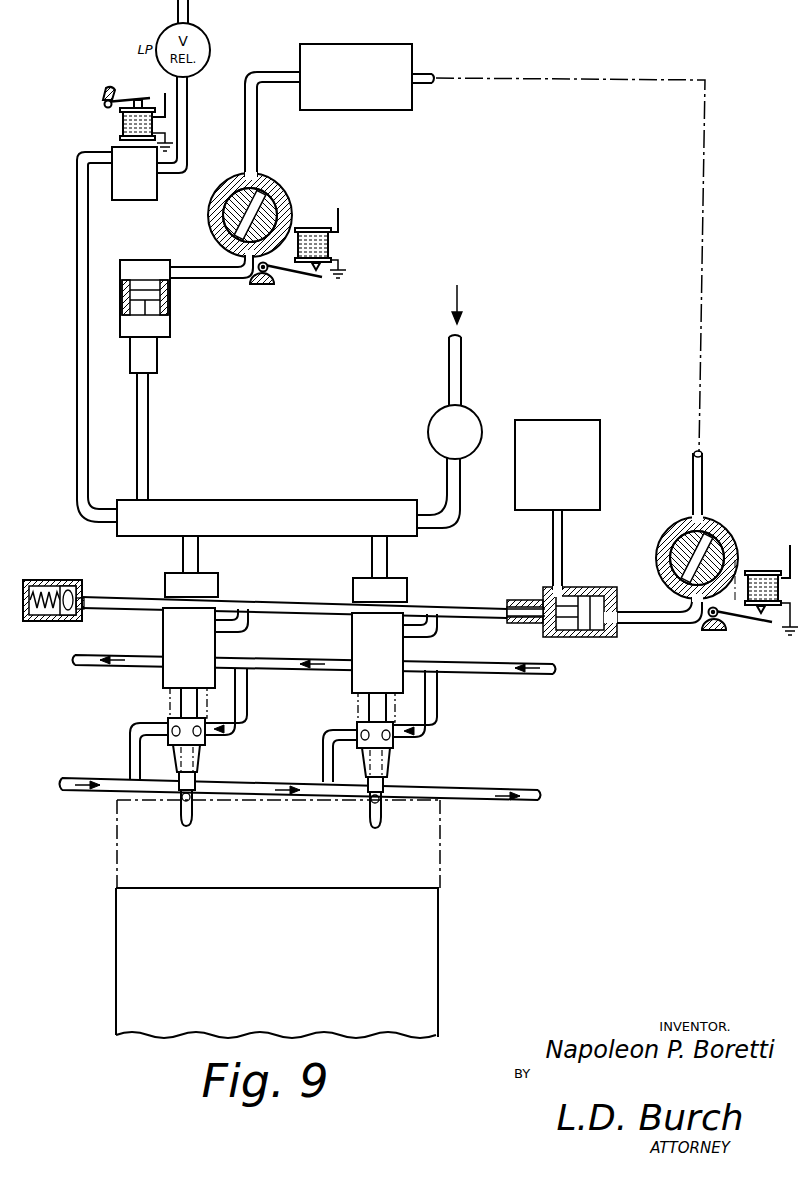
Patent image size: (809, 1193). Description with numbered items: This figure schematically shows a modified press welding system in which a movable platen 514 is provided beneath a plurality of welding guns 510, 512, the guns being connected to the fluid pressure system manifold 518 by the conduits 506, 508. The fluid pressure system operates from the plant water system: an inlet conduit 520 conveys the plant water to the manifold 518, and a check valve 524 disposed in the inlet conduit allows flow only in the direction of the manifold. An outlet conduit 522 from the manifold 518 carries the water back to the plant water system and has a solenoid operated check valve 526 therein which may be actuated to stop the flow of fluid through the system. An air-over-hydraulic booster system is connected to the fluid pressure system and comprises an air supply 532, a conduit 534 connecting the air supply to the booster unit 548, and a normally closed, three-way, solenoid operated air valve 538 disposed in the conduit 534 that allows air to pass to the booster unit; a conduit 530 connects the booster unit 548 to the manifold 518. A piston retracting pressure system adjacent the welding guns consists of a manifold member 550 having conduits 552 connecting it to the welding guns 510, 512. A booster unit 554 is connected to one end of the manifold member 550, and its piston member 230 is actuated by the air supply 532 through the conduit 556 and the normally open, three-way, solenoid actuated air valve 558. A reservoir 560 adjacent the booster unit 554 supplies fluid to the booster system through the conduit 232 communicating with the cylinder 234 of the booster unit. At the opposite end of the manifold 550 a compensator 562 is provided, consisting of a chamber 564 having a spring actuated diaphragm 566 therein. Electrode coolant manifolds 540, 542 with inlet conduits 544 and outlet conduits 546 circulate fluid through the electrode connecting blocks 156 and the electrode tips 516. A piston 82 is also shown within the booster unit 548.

The piston 82 is at (165, 293).
The electrode connecting block 156 is at (203, 768).
The piston member 230 is at (566, 616).
The conduit 232 is at (560, 535).
The cylinder 234 is at (557, 624).
The conduit 506 is at (192, 545).
The conduit 508 is at (388, 550).
The welding gun 510 is at (182, 627).
The welding gun 512 is at (382, 629).
The movable platen 514 is at (423, 925).
The electrode tip 516 is at (187, 824).
The manifold 518 is at (313, 499).
The inlet conduit 520 is at (458, 370).
The outlet conduit 522 is at (80, 380).
The check valve 524 is at (440, 423).
The solenoid operated check valve 526 is at (114, 147).
The conduit 530 is at (143, 410).
The air supply 532 is at (403, 65).
The conduit 534 is at (250, 137).
The solenoid operated air valve 538 is at (283, 212).
The electrode coolant manifold 540 is at (95, 790).
The electrode coolant manifold 542 is at (82, 666).
The inlet conduit 544 is at (246, 693).
The outlet conduit 546 is at (279, 773).
The booster unit 548 is at (173, 316).
The manifold member 550 is at (295, 605).
The conduit 552 is at (220, 632).
The booster unit 554 is at (610, 627).
The conduit 556 is at (700, 476).
The solenoid actuated air valve 558 is at (720, 530).
The reservoir 560 is at (580, 437).
The compensator 562 is at (62, 595).
The chamber 564 is at (60, 580).
The spring actuated diaphragm 566 is at (73, 580).